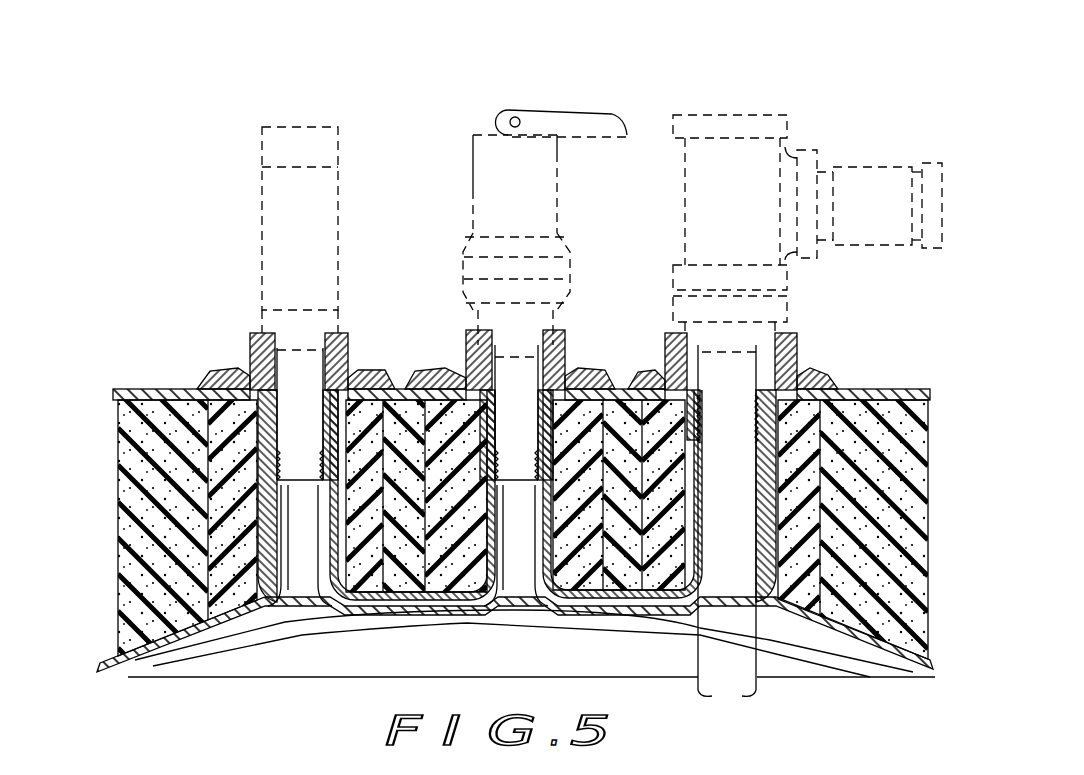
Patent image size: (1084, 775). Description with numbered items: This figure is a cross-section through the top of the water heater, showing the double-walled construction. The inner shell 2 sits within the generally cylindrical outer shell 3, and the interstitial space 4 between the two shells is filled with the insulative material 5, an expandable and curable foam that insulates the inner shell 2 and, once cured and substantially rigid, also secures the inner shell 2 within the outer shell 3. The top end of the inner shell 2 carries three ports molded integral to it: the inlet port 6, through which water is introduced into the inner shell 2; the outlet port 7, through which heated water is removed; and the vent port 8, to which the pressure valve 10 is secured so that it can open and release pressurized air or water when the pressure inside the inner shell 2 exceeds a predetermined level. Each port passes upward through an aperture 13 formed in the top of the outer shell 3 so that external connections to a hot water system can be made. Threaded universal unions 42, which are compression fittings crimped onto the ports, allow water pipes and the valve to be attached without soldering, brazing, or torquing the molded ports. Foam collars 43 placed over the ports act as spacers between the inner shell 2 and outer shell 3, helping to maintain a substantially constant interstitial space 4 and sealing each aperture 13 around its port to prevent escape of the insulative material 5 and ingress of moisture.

The inner shell 2 is at (183, 660).
The outer shell 3 is at (124, 390).
The interstitial space 4 is at (152, 417).
The insulative material 5 is at (903, 392).
The inlet port 6 is at (267, 594).
The outlet port 7 is at (755, 567).
The vent port 8 is at (492, 560).
The pressure valve 10 is at (473, 165).
The aperture 13 is at (358, 382).
The threaded universal union 42 is at (347, 340).
The foam collar 43 is at (190, 427).